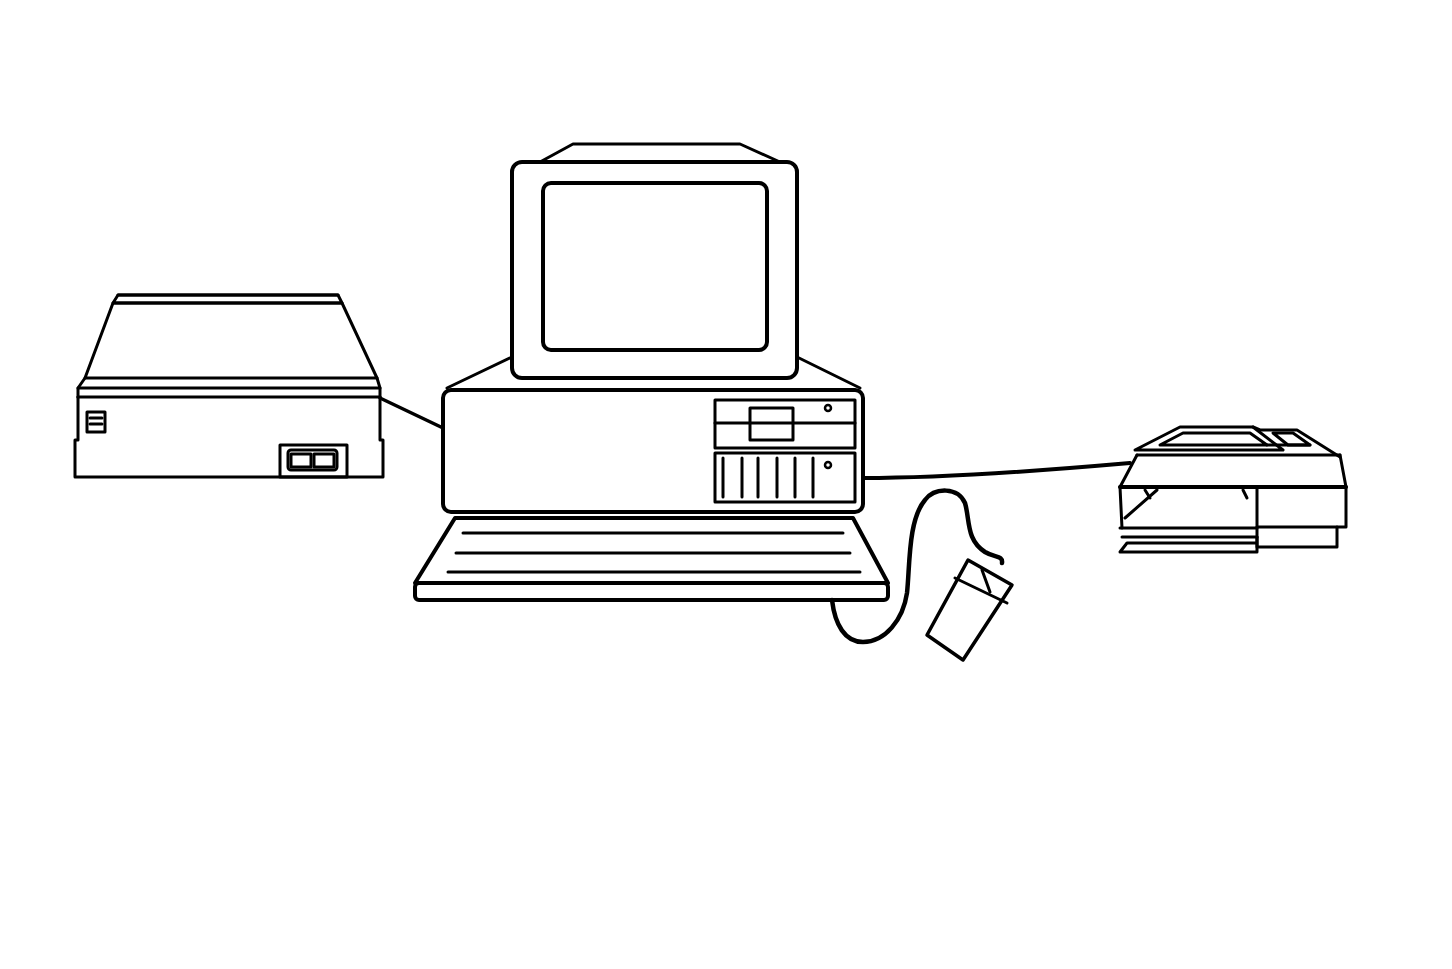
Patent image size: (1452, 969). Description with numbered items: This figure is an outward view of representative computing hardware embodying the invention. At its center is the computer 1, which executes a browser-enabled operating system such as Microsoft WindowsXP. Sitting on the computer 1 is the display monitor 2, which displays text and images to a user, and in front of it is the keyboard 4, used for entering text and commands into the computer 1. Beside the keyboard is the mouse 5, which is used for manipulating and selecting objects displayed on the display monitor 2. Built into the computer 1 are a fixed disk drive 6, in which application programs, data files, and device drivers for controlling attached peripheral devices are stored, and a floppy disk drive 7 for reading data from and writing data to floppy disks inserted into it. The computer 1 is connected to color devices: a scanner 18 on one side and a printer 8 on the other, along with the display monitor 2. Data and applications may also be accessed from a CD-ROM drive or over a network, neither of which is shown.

The computer 1 is at (718, 110).
The display monitor 2 is at (518, 225).
The keyboard 4 is at (505, 598).
The mouse 5 is at (955, 660).
The fixed disk drive 6 is at (760, 500).
The floppy disk drive 7 is at (853, 430).
The printer 8 is at (1347, 488).
The scanner 18 is at (155, 477).